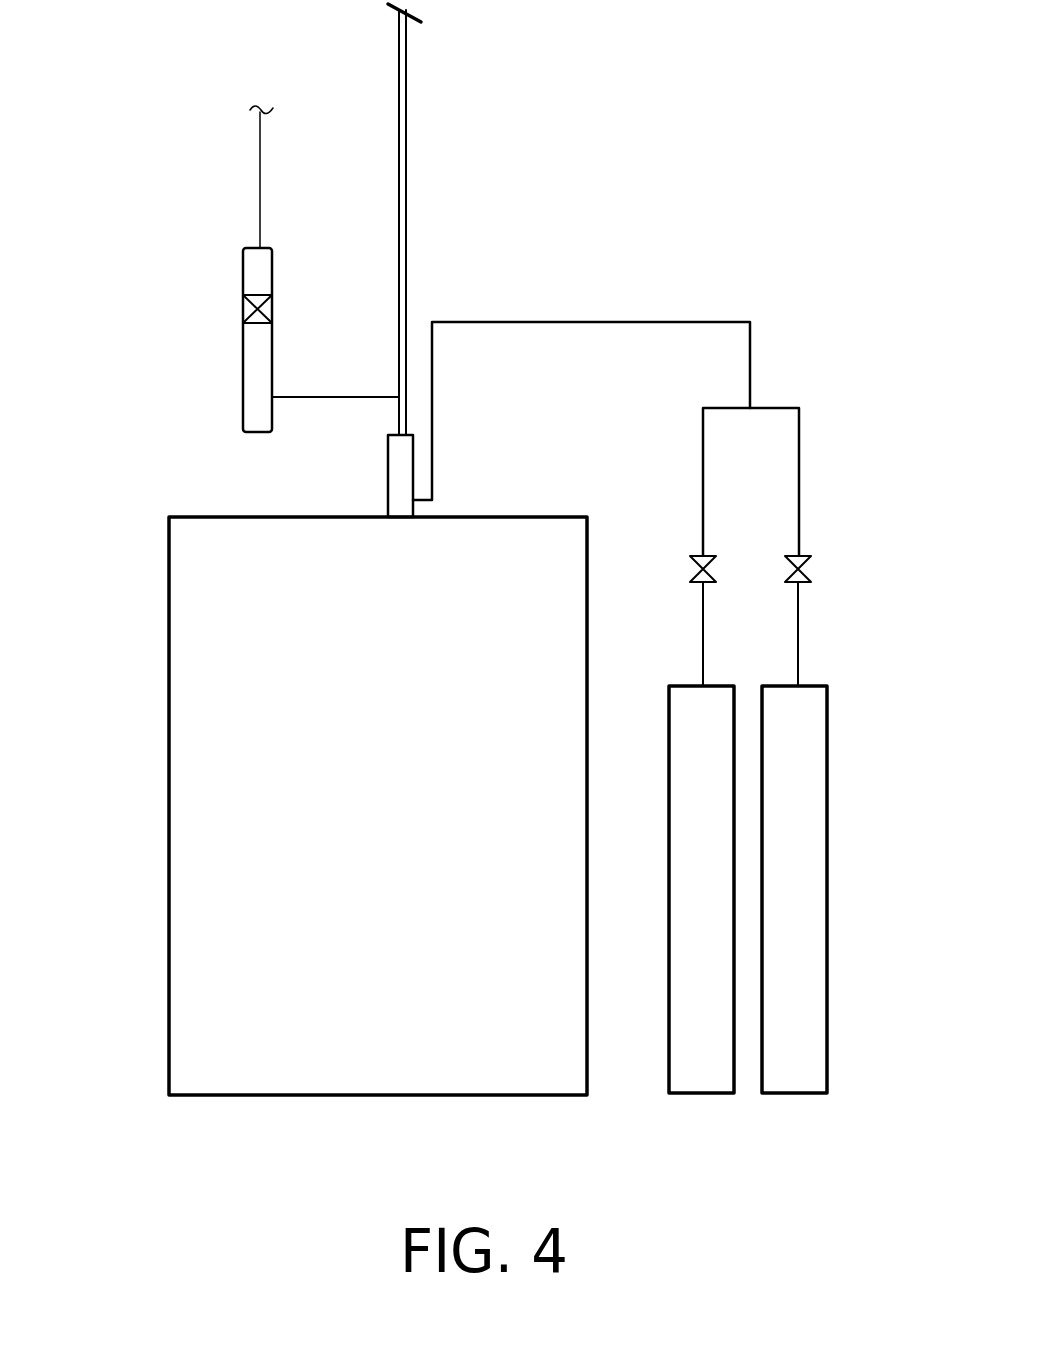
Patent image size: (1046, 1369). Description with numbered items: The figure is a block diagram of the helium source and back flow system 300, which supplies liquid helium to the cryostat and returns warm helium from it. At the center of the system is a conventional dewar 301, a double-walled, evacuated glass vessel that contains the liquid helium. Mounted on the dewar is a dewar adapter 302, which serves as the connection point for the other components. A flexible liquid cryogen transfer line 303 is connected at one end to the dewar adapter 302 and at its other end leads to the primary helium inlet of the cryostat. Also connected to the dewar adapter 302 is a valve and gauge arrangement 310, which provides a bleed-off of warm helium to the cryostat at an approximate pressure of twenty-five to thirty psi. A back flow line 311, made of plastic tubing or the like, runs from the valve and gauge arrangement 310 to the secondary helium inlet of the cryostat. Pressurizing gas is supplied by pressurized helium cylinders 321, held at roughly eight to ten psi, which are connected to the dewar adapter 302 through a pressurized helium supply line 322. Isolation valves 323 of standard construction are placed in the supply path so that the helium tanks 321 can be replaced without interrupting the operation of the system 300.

The helium source and back flow system 300 is at (112, 440).
The dewar 301 is at (169, 787).
The dewar adapter 302 is at (388, 490).
The liquid cryogen transfer line 303 is at (407, 185).
The valve and gauge arrangement 310 is at (243, 272).
The back flow line 311 is at (258, 172).
The pressurized helium cylinders 321 is at (790, 1097).
The pressurized helium supply line 322 is at (703, 553).
The isolation valves 323 is at (708, 480).